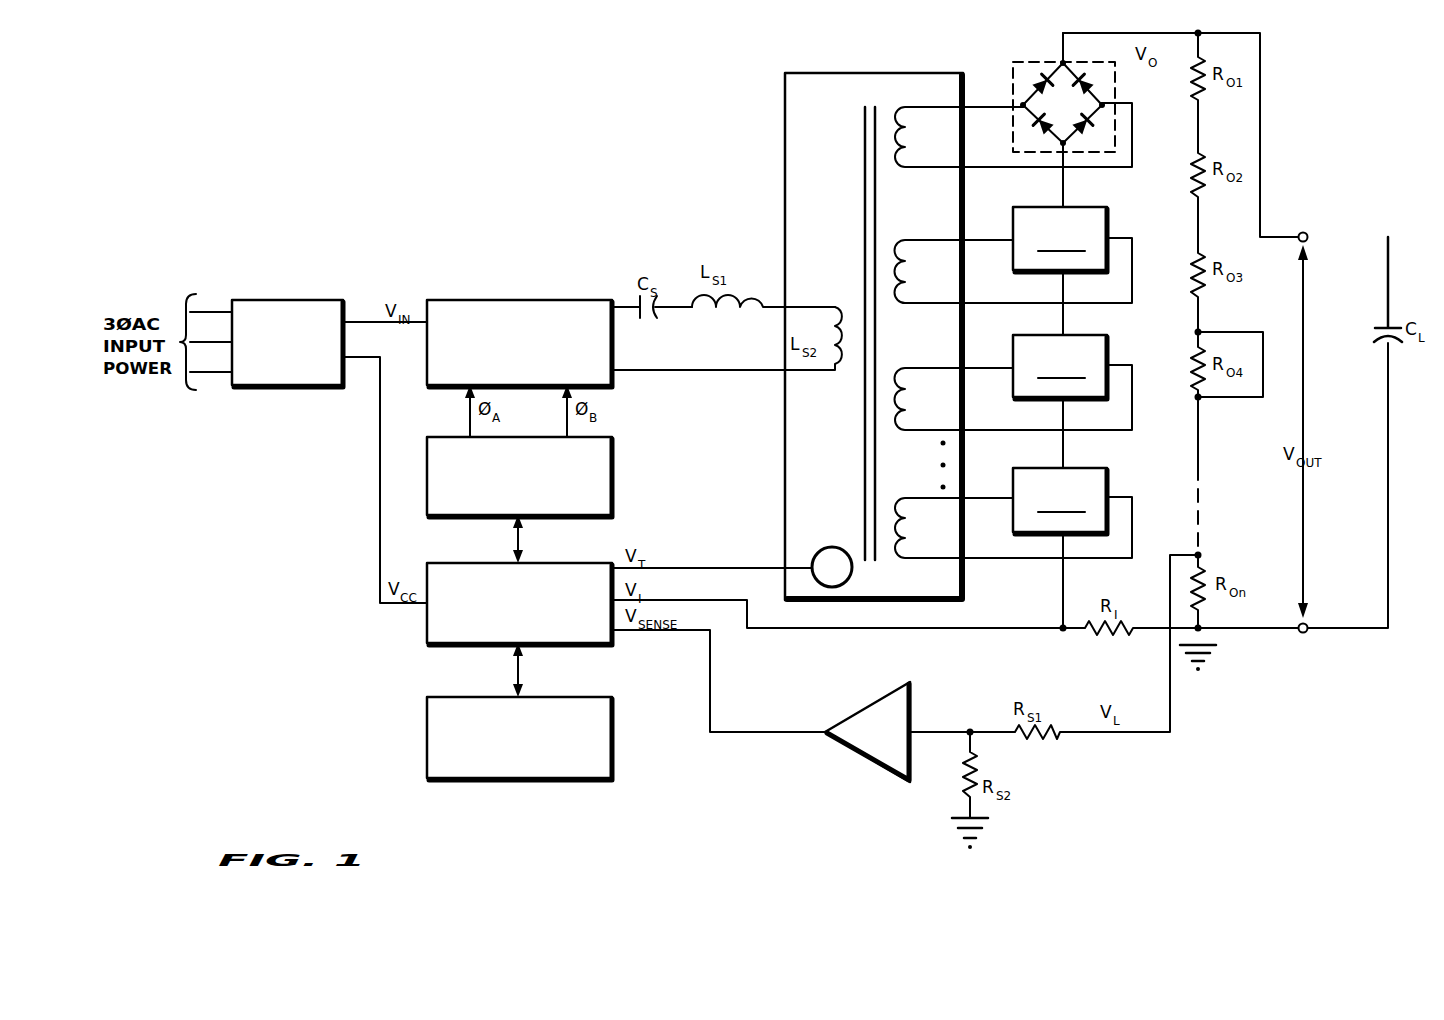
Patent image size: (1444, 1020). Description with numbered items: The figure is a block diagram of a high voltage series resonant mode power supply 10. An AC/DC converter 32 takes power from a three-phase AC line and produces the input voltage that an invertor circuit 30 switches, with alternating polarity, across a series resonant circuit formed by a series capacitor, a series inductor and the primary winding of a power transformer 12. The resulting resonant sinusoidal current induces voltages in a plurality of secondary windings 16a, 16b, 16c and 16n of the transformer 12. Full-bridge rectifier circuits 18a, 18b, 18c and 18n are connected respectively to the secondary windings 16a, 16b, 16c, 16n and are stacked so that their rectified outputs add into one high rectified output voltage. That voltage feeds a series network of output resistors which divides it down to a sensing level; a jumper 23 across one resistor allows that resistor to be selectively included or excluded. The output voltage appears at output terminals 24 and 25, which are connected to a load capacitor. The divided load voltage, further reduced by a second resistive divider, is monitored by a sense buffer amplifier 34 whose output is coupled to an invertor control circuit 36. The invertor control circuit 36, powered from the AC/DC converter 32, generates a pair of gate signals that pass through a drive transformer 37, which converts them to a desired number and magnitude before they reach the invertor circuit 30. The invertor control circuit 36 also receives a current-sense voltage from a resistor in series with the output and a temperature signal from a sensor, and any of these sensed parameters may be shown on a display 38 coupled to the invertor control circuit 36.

The series resonant mode power supply 10 is at (444, 226).
The power transformer 12 is at (917, 73).
The secondary winding 16a is at (890, 107).
The secondary winding 16b is at (898, 240).
The secondary winding 16c is at (898, 368).
The secondary winding 16n is at (898, 558).
The full-bridge rectifier circuit 18a is at (1030, 62).
The full-bridge rectifier circuit 18b is at (1060, 271).
The full-bridge rectifier circuit 18c is at (1060, 401).
The full-bridge rectifier circuit 18n is at (1060, 548).
The jumper 23 is at (1225, 397).
The output terminal 24 is at (1306, 232).
The output terminal 25 is at (1300, 634).
The invertor circuit 30 is at (553, 300).
The AC/DC converter 32 is at (306, 300).
The sense buffer amplifier 34 is at (850, 716).
The invertor control circuit 36 is at (563, 565).
The drive transformer 37 is at (618, 455).
The display 38 is at (570, 697).